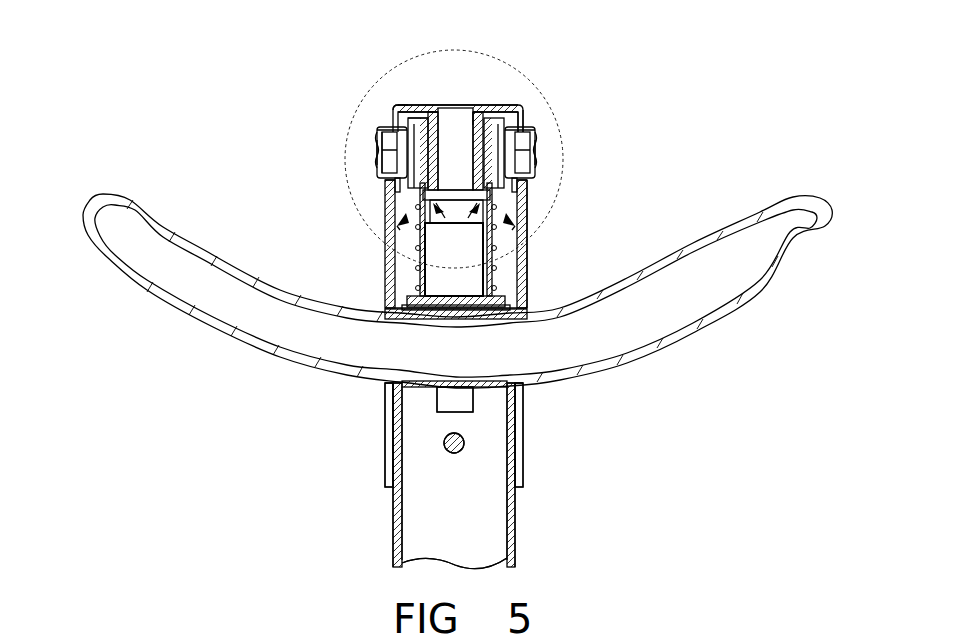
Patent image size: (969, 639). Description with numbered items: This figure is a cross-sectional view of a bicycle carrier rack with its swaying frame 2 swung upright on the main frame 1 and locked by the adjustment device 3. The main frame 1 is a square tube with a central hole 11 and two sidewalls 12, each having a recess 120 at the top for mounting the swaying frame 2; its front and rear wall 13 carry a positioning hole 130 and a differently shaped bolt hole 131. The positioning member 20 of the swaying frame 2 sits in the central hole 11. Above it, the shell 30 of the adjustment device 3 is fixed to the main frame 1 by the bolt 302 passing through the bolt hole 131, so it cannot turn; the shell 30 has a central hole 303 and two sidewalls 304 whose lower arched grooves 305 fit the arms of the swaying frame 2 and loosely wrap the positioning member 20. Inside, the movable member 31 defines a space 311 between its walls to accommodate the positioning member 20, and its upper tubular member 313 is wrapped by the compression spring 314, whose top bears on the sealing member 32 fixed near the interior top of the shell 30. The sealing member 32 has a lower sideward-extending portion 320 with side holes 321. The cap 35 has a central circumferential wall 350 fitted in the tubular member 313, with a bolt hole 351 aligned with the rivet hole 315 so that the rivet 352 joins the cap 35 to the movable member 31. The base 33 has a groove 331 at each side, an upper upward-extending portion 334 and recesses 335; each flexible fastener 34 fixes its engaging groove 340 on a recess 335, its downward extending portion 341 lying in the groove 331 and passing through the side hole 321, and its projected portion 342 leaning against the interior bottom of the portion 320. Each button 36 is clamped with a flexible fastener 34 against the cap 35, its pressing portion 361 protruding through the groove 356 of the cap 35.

The main frame 1 is at (516, 560).
The central hole 11 is at (430, 495).
The sidewalls 12 is at (392, 527).
The front and rear wall 13 is at (442, 540).
The recess 120 is at (392, 386).
The positioning hole 130 is at (465, 400).
The bolt hole 131 is at (463, 456).
The swaying frame 2 is at (185, 224).
The positioning member 20 is at (440, 393).
The adjustment device 3 is at (438, 32).
The shell 30 is at (525, 470).
The bolt 302 is at (444, 446).
The central hole 303 is at (525, 258).
The sidewalls 304 is at (390, 280).
The arched groove 305 is at (386, 433).
The movable member 31 is at (507, 272).
The space 311 is at (456, 314).
The tubular member 313 is at (424, 262).
The compression spring 314 is at (419, 237).
The rivet hole 315 is at (468, 188).
The sealing member 32 is at (392, 189).
The lower sideward-extending portion 320 is at (492, 194).
The side hole 321 is at (456, 266).
The base 33 is at (521, 152).
The groove 331 is at (474, 106).
The upper upward-extending portion 334 is at (398, 150).
The recess 335 is at (515, 108).
The flexible fastener 34 is at (393, 127).
The engaging groove 340 is at (403, 105).
The downward extending portion 341 is at (384, 163).
The projected portion 342 is at (401, 218).
The cap 35 is at (492, 116).
The central circumferential wall 350 is at (485, 112).
The bolt hole 351 is at (466, 243).
The rivet 352 is at (413, 158).
The groove 356 is at (374, 122).
The button 36 is at (376, 135).
The pressing portion 361 is at (378, 155).